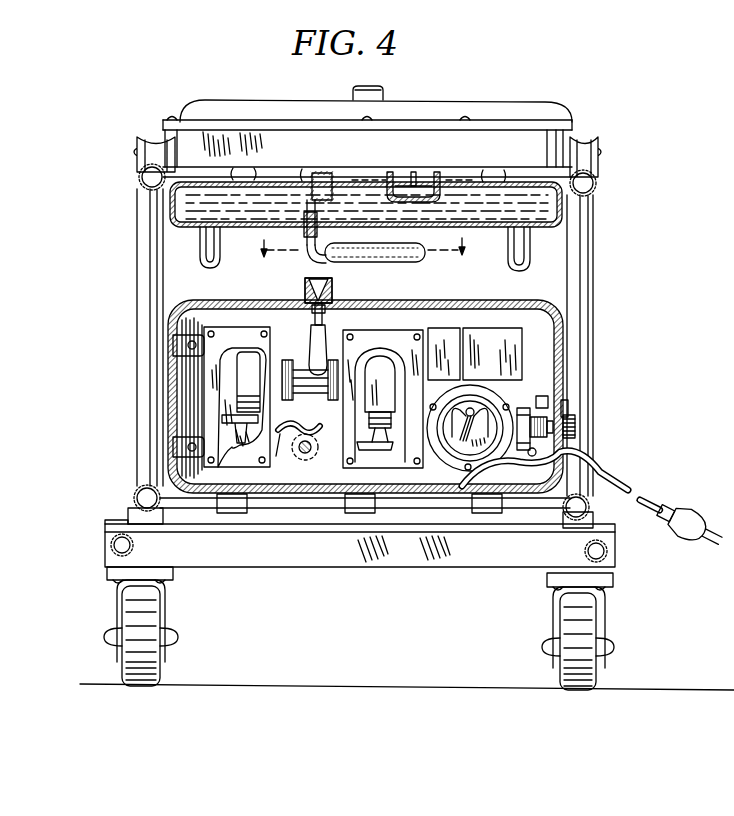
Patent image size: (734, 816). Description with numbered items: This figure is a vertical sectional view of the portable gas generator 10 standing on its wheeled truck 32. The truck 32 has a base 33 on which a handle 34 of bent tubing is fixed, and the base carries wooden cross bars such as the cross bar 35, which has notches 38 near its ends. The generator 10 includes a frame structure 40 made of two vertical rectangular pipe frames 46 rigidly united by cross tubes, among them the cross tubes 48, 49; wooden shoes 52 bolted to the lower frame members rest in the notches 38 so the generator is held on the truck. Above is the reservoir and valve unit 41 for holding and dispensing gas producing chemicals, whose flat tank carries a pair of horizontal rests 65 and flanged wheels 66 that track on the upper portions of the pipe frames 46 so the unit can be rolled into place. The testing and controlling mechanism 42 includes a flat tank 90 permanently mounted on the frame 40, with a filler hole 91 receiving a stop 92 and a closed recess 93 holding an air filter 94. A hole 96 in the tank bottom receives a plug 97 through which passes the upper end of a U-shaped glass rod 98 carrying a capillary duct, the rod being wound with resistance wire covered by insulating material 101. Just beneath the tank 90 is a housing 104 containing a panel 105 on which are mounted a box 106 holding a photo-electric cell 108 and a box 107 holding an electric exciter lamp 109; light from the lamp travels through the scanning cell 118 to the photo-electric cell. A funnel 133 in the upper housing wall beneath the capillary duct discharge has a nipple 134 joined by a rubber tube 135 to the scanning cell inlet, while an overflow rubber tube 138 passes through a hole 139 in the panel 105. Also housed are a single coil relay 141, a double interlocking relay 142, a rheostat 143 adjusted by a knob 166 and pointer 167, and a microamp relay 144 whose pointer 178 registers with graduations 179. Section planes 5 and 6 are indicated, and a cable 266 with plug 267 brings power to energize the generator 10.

The gas generator 10 is at (607, 82).
The wheeled truck 32 is at (249, 571).
The base 33 is at (402, 556).
The handle 34 is at (134, 546).
The wooden cross bar 35 is at (104, 533).
The notches 38 is at (130, 516).
The frame structure 40 is at (600, 279).
The reservoir and valve unit 41 is at (489, 101).
The mechanism 42 is at (166, 347).
The rectangular pipe frames 46 is at (147, 289).
The cross tube 48 is at (514, 180).
The cross tube 49 is at (331, 513).
The wooden shoes 52 is at (133, 509).
The horizontal rests 65 is at (203, 260).
The flanged wheels 66 is at (150, 138).
The section line 5- 5 is at (365, 252).
The section line 6- 6 is at (364, 178).
The flat tank 90 is at (271, 177).
The filler hole 91 is at (306, 176).
The stop 92 is at (323, 172).
The closed recess 93 is at (429, 184).
The air filter 94 is at (414, 188).
The hole 96 is at (304, 230).
The plug 97 is at (309, 241).
The glass rod 98 is at (312, 252).
The insulating material 101 is at (368, 259).
The housing 104 is at (413, 316).
The panel 105 is at (190, 392).
The box 106 is at (207, 417).
The box 107 is at (387, 332).
The photo-electric cell 108 is at (250, 363).
The electric exciter lamp 109 is at (387, 371).
The scanning cell 118 is at (299, 402).
The funnel 133 is at (334, 289).
The nipple 134 is at (312, 320).
The rubber tube 135 is at (311, 348).
The rubber tube 138 is at (306, 431).
The hole 139 is at (280, 436).
The single coil relay 141 is at (447, 332).
The double interlocking relay 142 is at (500, 332).
The rheostat 143 is at (545, 400).
The microamp relay 144 is at (501, 406).
The knob 166 is at (572, 420).
The pointer 167 is at (566, 403).
The pointer 178 is at (472, 409).
The graduations 179 is at (468, 446).
The cable 266 is at (603, 468).
The plug 267 is at (690, 514).